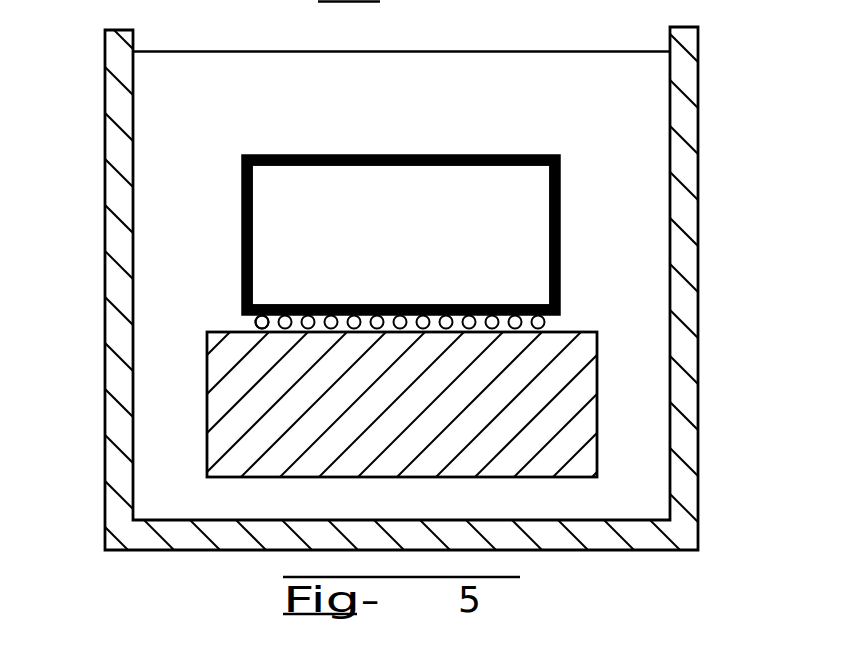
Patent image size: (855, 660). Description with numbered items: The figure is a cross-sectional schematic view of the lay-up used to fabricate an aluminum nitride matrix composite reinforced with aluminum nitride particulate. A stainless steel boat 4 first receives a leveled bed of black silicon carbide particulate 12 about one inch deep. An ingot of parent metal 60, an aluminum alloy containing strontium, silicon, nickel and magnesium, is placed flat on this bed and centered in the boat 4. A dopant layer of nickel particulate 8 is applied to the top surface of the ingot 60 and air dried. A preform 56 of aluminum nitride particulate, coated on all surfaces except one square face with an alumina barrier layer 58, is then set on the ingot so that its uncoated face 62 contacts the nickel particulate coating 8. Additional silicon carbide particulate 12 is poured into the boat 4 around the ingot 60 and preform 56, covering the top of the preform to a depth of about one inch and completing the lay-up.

The stainless steel boat 4 is at (685, 155).
The black silicon carbide particulate 12 is at (145, 178).
The preform 56 is at (535, 250).
The barrier layer 58 is at (270, 157).
The nickel particulate dopant layer 8 is at (545, 322).
The parent metal ingot 60 is at (392, 408).
The uncoated face 62 is at (270, 333).